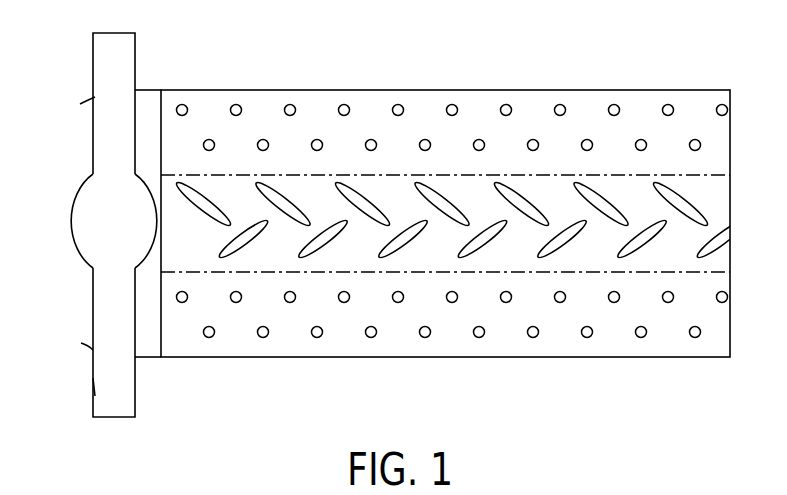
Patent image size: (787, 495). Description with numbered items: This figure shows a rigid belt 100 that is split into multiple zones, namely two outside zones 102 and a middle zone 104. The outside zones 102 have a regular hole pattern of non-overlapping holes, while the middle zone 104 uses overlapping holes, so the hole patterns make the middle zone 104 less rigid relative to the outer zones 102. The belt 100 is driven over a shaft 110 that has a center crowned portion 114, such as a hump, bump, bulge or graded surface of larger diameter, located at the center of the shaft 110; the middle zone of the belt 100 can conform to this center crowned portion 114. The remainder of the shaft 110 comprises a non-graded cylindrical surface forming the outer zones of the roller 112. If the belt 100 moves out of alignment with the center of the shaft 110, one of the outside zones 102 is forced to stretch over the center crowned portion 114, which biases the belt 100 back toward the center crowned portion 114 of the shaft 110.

The rigid belt 100 is at (400, 90).
The outside zones 102 is at (482, 308).
The middle zone 104 is at (602, 223).
The shaft 110 is at (118, 410).
The outer zones of the roller 112 is at (108, 59).
The center crowned portion 114 is at (110, 234).